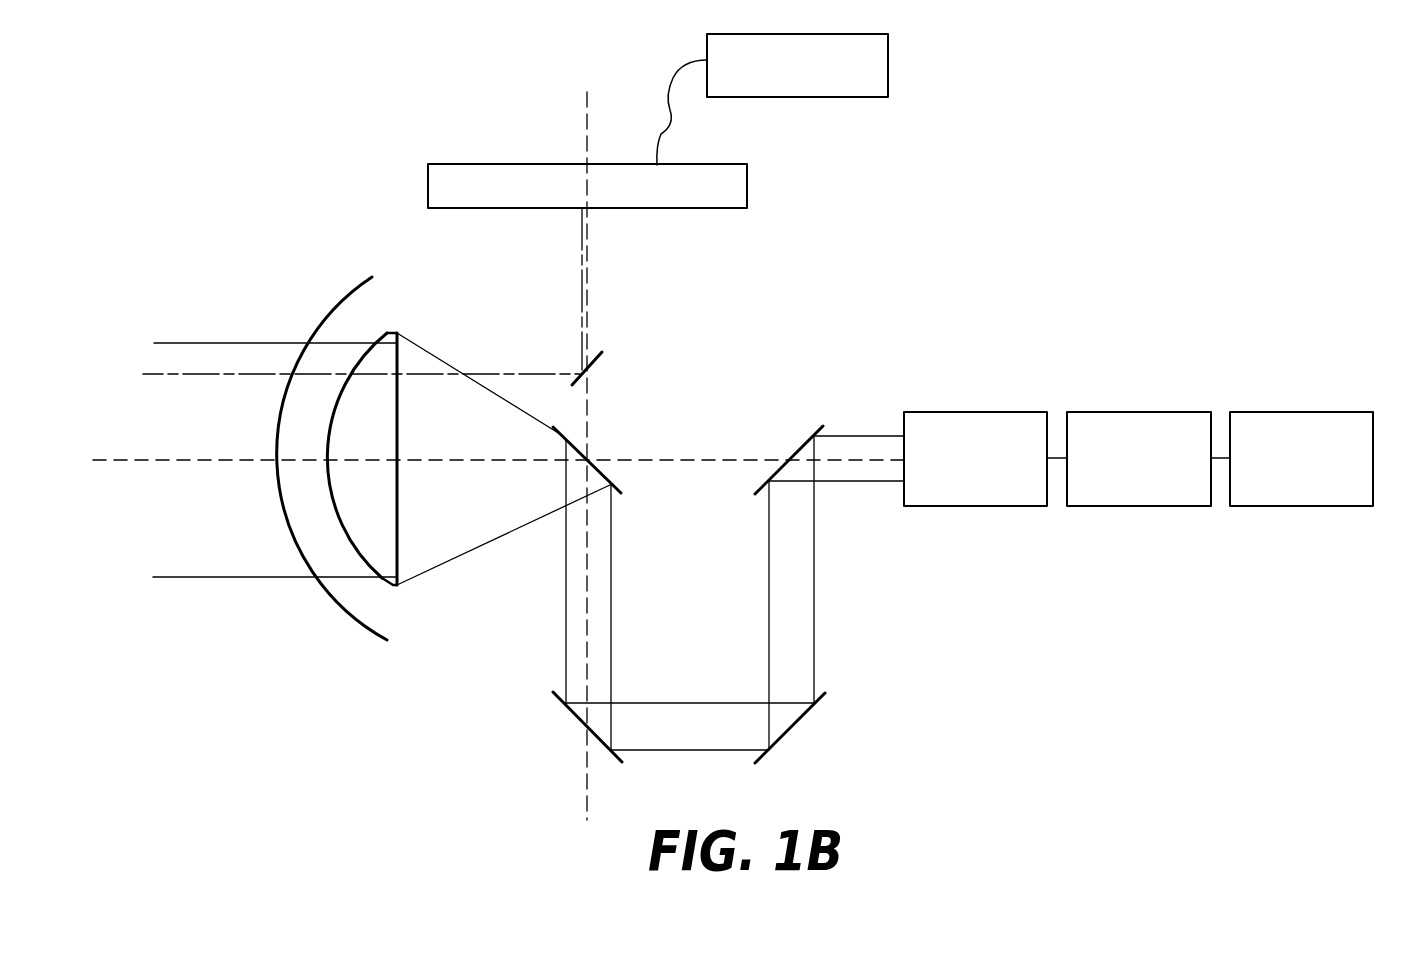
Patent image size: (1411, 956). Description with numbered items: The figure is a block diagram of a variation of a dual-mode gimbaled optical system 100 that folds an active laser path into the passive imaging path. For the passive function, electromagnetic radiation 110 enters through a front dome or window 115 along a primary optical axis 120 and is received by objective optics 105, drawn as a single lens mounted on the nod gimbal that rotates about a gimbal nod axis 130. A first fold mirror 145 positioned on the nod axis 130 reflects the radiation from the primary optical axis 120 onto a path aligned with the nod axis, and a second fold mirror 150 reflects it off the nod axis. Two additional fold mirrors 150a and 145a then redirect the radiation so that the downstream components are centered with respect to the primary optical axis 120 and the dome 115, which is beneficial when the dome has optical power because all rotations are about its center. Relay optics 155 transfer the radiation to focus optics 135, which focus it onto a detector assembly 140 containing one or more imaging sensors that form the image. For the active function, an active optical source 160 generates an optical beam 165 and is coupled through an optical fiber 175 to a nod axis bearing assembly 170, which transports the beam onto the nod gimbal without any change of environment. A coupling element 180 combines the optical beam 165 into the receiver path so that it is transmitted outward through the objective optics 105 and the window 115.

The gimbaled optical system 100 is at (279, 203).
The objective optics 105 is at (397, 335).
The electromagnetic radiation 110 is at (217, 343).
The front dome or window 115 is at (353, 620).
The primary optical axis 120 is at (142, 460).
The gimbal nod axis 130 is at (587, 143).
The focus optics 135 is at (1153, 412).
The detector assembly 140 is at (1285, 412).
The first fold mirror 145 is at (615, 480).
The fold mirror 145a is at (823, 427).
The second fold mirror 150 is at (562, 703).
The fold mirror 150a is at (803, 717).
The relay optics 155 is at (983, 412).
The active optical source 160 is at (873, 98).
The optical beam 165 is at (167, 374).
The nod axis bearing assembly 170 is at (468, 166).
The optical fiber 175 is at (667, 82).
The coupling element 180 is at (602, 357).